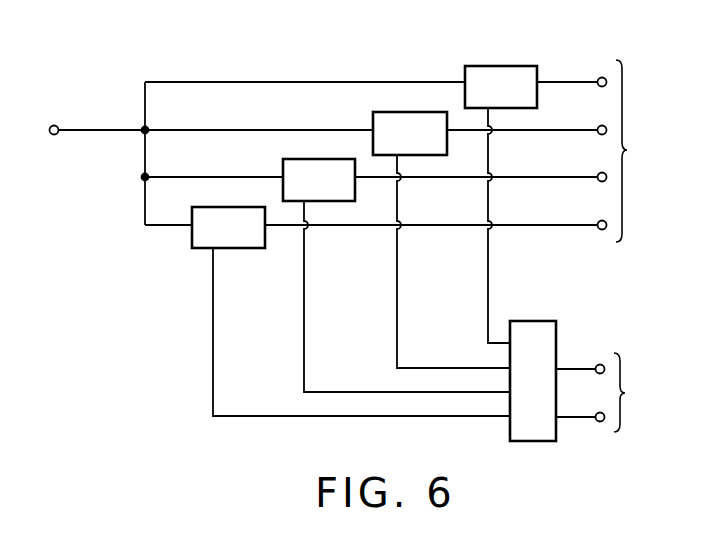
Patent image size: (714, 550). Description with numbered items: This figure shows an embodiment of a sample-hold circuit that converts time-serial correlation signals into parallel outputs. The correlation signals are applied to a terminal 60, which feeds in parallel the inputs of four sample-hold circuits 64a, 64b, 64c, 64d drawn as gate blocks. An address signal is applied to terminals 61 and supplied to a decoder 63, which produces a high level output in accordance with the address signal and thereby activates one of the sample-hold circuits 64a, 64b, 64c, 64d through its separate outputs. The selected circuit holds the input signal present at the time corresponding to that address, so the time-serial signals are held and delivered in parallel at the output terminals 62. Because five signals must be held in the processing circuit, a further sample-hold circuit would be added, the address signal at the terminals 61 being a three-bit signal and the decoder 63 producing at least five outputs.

The terminal 60 is at (54, 125).
The terminals 61 is at (612, 392).
The output terminals 62 is at (633, 151).
The decoder 63 is at (537, 332).
The sample-hold circuit 64a is at (518, 78).
The sample-hold circuit 64b is at (388, 122).
The sample-hold circuit 64c is at (293, 167).
The sample-hold circuit 64d is at (193, 239).